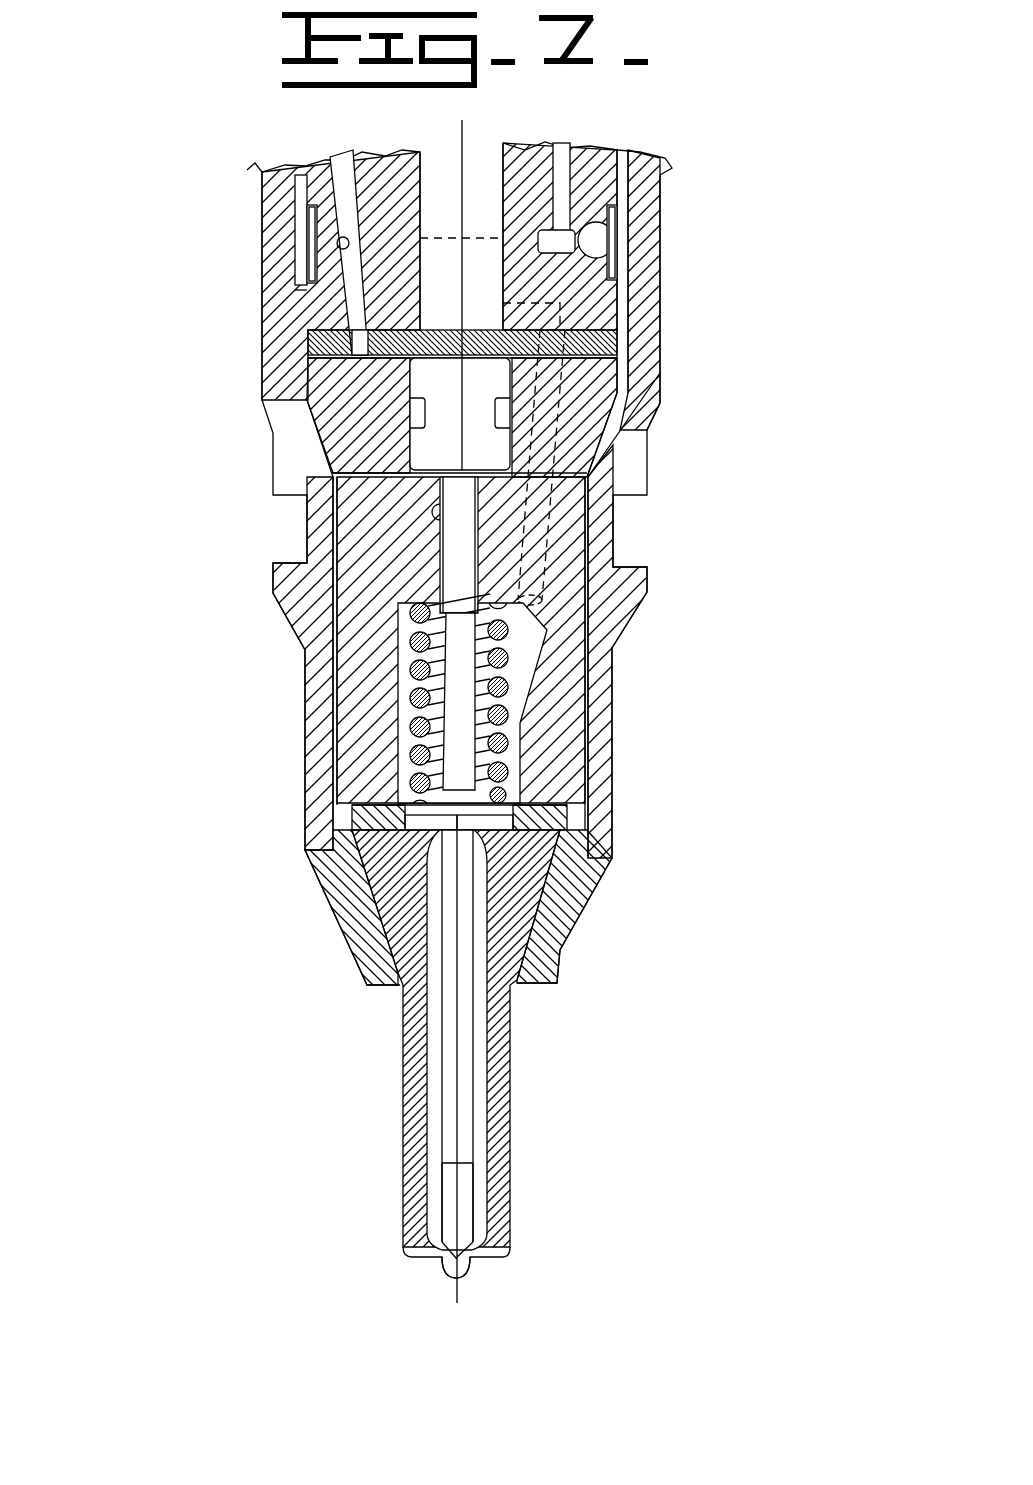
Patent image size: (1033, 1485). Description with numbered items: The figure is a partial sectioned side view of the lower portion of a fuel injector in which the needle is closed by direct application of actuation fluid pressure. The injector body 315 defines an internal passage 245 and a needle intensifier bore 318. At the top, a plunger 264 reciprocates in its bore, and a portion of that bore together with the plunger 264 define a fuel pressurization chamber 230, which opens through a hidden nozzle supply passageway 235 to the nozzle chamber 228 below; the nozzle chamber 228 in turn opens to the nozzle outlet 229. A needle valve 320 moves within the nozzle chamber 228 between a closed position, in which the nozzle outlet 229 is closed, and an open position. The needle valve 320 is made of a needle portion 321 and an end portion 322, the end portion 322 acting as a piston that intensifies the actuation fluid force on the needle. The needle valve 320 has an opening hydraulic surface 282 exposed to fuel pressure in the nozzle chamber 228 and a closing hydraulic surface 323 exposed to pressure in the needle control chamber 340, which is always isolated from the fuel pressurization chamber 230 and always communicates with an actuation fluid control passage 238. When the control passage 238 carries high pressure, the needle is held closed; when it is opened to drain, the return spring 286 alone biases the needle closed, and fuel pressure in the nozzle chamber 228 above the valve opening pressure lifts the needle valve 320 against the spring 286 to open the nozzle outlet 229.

The plunger 264 is at (430, 172).
The actuation fluid control passage 238 is at (343, 243).
The fuel pressurization chamber 230 is at (487, 288).
The hydraulic closing surface 323 is at (600, 335).
The end portion 322 is at (518, 395).
The needle control chamber 340 is at (412, 360).
The needle intensifier bore 318 is at (420, 423).
The internal passage 245 is at (440, 513).
The nozzle supply passageway 235 is at (590, 537).
The injector body 315 is at (612, 723).
The return spring 286 is at (410, 720).
The nozzle chamber 228 is at (565, 850).
The needle portion 321 is at (473, 940).
The needle valve 320 is at (440, 1005).
The opening hydraulic surface 282 is at (510, 1250).
The nozzle outlet 229 is at (470, 1265).